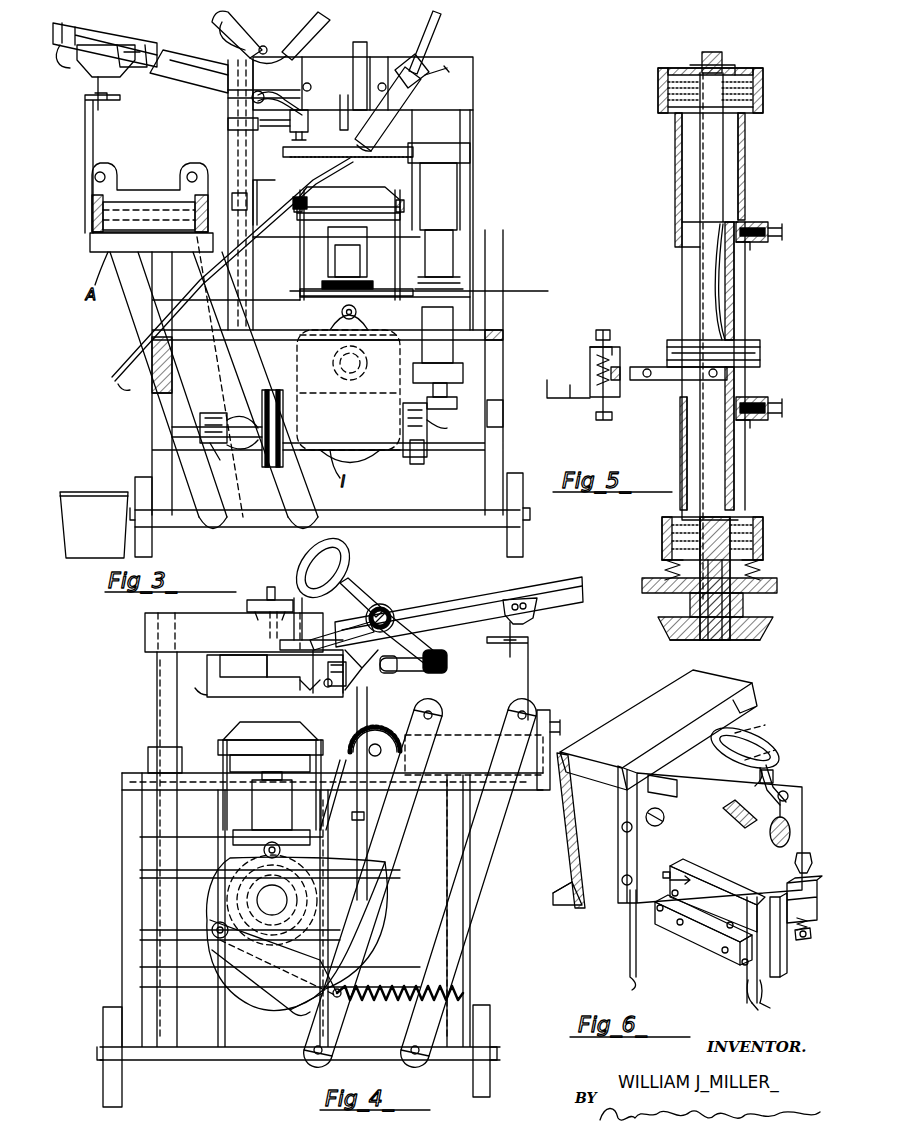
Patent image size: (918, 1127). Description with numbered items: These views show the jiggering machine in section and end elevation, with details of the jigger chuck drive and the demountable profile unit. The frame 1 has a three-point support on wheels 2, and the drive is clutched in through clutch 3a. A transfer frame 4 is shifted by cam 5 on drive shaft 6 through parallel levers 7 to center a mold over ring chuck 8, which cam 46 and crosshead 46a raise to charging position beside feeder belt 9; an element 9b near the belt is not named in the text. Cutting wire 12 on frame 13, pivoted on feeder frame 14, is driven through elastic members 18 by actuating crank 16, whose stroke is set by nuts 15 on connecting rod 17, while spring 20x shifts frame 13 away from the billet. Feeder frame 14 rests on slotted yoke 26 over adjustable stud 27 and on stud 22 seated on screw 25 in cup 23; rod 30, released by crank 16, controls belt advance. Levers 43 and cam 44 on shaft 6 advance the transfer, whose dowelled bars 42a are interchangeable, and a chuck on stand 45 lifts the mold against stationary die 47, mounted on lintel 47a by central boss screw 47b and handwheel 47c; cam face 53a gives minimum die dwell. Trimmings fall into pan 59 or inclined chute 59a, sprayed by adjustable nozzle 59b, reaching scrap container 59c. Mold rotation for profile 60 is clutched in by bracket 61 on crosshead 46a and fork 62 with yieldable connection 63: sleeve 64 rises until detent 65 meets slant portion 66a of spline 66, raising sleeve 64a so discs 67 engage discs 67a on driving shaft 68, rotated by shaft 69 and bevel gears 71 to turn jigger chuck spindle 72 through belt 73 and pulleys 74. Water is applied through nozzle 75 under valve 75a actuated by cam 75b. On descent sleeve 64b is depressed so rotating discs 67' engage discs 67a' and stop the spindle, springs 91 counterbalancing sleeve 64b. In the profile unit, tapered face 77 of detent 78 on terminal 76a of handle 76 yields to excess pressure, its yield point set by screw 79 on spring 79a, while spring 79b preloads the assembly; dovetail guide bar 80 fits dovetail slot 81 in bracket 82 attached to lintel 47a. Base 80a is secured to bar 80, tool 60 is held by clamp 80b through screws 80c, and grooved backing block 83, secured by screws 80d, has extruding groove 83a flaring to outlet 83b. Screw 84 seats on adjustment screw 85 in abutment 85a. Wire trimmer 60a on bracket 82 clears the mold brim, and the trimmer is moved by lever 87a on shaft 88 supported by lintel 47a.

In FIG. 3, the frame 1 is at (152, 460).
In FIG. 3, the wheels 2 is at (523, 545).
In FIG. 3, the clutch 3a is at (225, 455).
In FIG. 3, the frame 4 is at (143, 195).
In FIG. 4, the frame 4 is at (478, 732).
In FIG. 4, the cam 5 is at (288, 1010).
In FIG. 3, the drive shaft 6 is at (333, 375).
In FIG. 3, the parallel levers 7 is at (280, 475).
In FIG. 4, the parallel levers 7 is at (480, 880).
In FIG. 4, the ring chuck 8 is at (218, 760).
In FIG. 4, the feeder belt 9 is at (327, 657).
In FIG. 3, the hook 9b is at (59, 65).
In FIG. 3, the cutting wire 12 is at (312, 55).
In FIG. 4, the cutting wire 12 is at (300, 628).
In FIG. 3, the frame 13 is at (320, 22).
In FIG. 4, the frame 13 is at (345, 555).
In FIG. 3, the feeder frame 14 is at (125, 37).
In FIG. 4, the feeder frame 14 is at (585, 598).
In FIG. 4, the nuts 15 is at (345, 828).
In FIG. 4, the actuating crank 16 is at (408, 673).
In FIG. 4, the connecting rod 17 is at (355, 725).
In FIG. 4, the elastic members 18 is at (395, 605).
In FIG. 4, the spring 20x is at (383, 602).
In FIG. 4, the stud 22 is at (301, 687).
In FIG. 4, the cup 23 is at (325, 688).
In FIG. 4, the screw 25 is at (340, 688).
In FIG. 4, the slotted yoke 26 is at (530, 622).
In FIG. 3, the vertically adjustable stud 27 is at (108, 88).
In FIG. 4, the vertically adjustable stud 27 is at (508, 660).
In FIG. 4, the rod 30 is at (425, 640).
In FIG. 3, the dowelled bars 42a is at (395, 200).
In FIG. 3, the levers 43 is at (298, 270).
In FIG. 3, the cam 44 is at (375, 460).
In FIG. 4, the cam 44 is at (235, 985).
In FIG. 3, the stand 45 is at (362, 262).
In FIG. 4, the stand 45 is at (252, 802).
In FIG. 4, the cam 46 is at (385, 728).
In FIG. 3, the crosshead 46a is at (470, 93).
In FIG. 4, the crosshead 46a is at (148, 755).
In FIG. 4, the stationary die 47 is at (240, 697).
In FIG. 6, the lintel 47a is at (583, 915).
In FIG. 4, the central boss screw 47b is at (272, 587).
In FIG. 4, the handwheel 47c is at (247, 606).
In FIG. 4, the cam face 53a is at (280, 1008).
In FIG. 3, the pan 59 is at (370, 160).
In FIG. 4, the pan 59 is at (192, 698).
In FIG. 3, the inclined chute 59a is at (225, 279).
In FIG. 3, the adjustable nozzle 59b is at (445, 95).
In FIG. 4, the adjustable nozzle 59b is at (234, 632).
In FIG. 3, the scrap container 59c is at (104, 492).
In FIG. 3, the profile tool 60 is at (340, 97).
In FIG. 4, the profile tool 60 is at (276, 698).
In FIG. 6, the profile tool 60 is at (762, 980).
In FIG. 6, the wire trimmer 60a is at (620, 975).
In FIG. 5, the bracket 61 is at (579, 372).
In FIG. 3, the fork 62 is at (419, 292).
In FIG. 5, the fork 62 is at (668, 380).
In FIG. 5, the yieldable and adjustable connection 63 is at (612, 360).
In FIG. 3, the sleeve 64 is at (440, 240).
In FIG. 5, the sleeve 64 is at (686, 275).
In FIG. 5, the sleeve 64a is at (745, 158).
In FIG. 5, the sleeve 64b is at (690, 480).
In FIG. 5, the detent 65 is at (745, 220).
In FIG. 5, the spline 66 is at (734, 262).
In FIG. 5, the slant portion 66a is at (740, 295).
In FIG. 5, the discs 67 is at (732, 90).
In FIG. 5, the mating discs 67a is at (736, 74).
In FIG. 5, the discs 67a' is at (737, 533).
In FIG. 5, the rotating discs 67' is at (753, 578).
In FIG. 5, the driving shaft 68 is at (715, 50).
In FIG. 3, the shaft 69 is at (420, 465).
In FIG. 3, the bevel gears 71 is at (445, 430).
In FIG. 5, the bevel gears 71 is at (770, 635).
In FIG. 3, the jigger chuck spindle 72 is at (346, 270).
In FIG. 3, the belt 73 is at (320, 289).
In FIG. 3, the pulleys 74 is at (440, 275).
In FIG. 5, the pulleys 74 is at (755, 335).
In FIG. 3, the nozzle 75 is at (300, 110).
In FIG. 3, the valve 75a is at (262, 88).
In FIG. 3, the cam 75b is at (265, 172).
In FIG. 6, the handle 76 is at (765, 728).
In FIG. 6, the terminal 76a is at (790, 755).
In FIG. 6, the tapered face 77 is at (790, 772).
In FIG. 6, the detent 78 is at (775, 785).
In FIG. 6, the screw 79 is at (790, 800).
In FIG. 6, the spring 79a is at (790, 835).
In FIG. 6, the spring 79b is at (665, 872).
In FIG. 6, the dovetail guide bar 80 is at (735, 827).
In FIG. 6, the base 80a is at (790, 955).
In FIG. 6, the clamp 80b is at (705, 962).
In FIG. 6, the screws 80c is at (663, 918).
In FIG. 6, the screws 80d is at (695, 945).
In FIG. 6, the dovetail slot 81 is at (722, 808).
In FIG. 6, the bracket 82 is at (688, 725).
In FIG. 6, the grooved backing block 83 is at (745, 995).
In FIG. 6, the extruding groove 83a is at (770, 1012).
In FIG. 6, the outlet 83b is at (770, 1008).
In FIG. 6, the screw 84 is at (812, 858).
In FIG. 6, the adjustment screw 85 is at (811, 934).
In FIG. 6, the abutment 85a is at (808, 922).
In FIG. 3, the lever 87a is at (292, 198).
In FIG. 3, the shaft 88 is at (228, 148).
In FIG. 5, the springs 91 is at (765, 570).